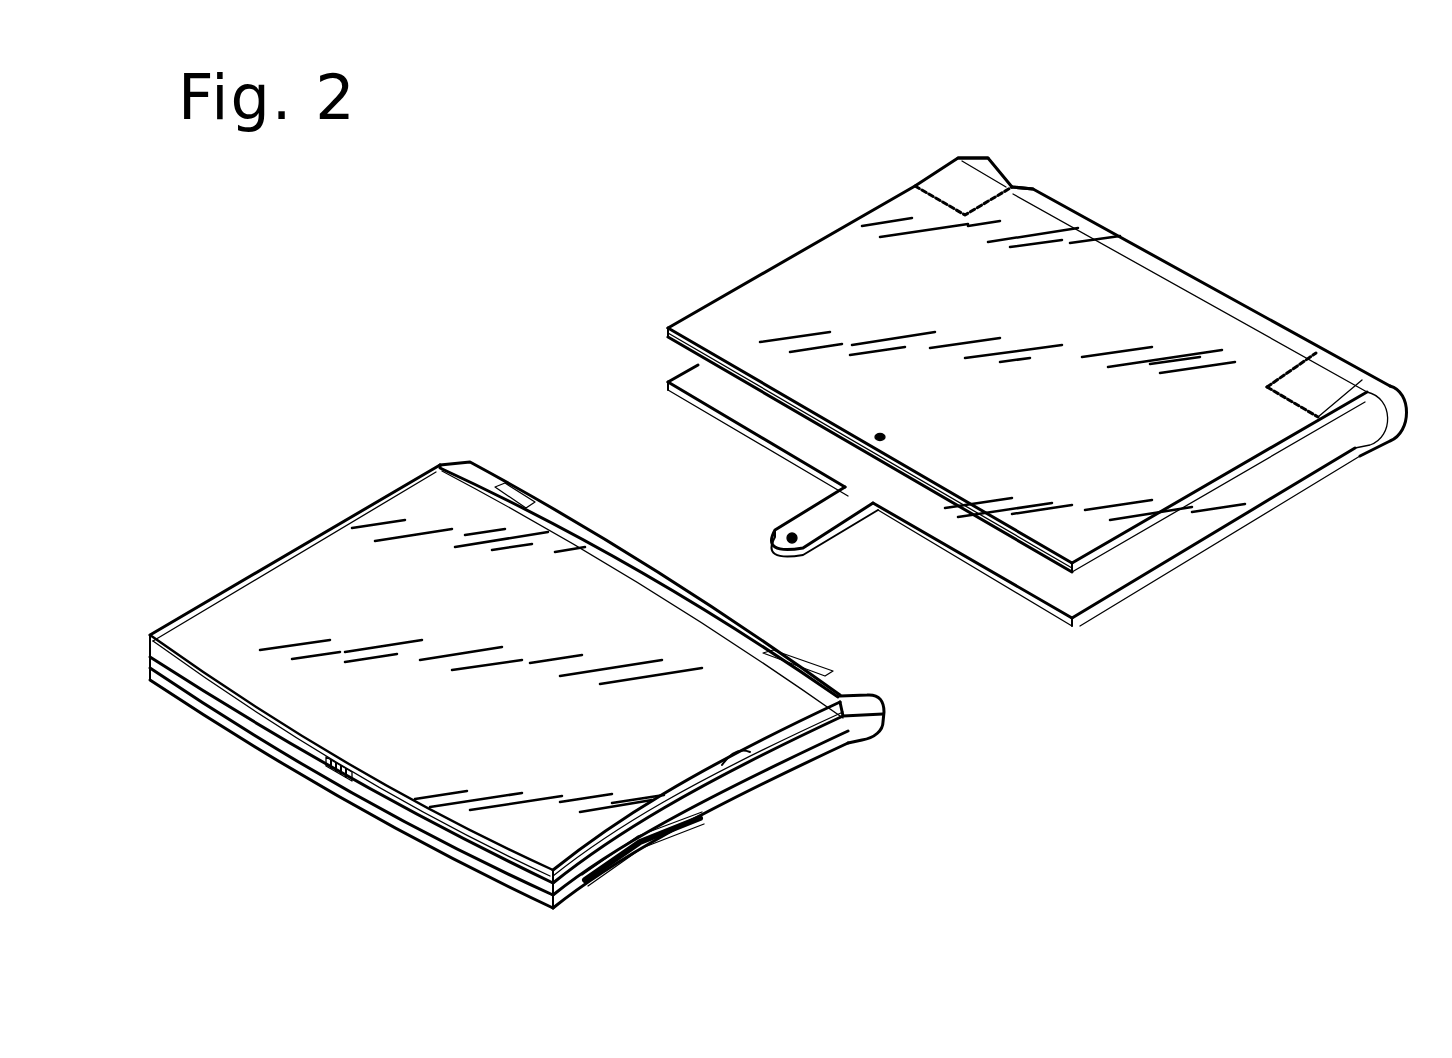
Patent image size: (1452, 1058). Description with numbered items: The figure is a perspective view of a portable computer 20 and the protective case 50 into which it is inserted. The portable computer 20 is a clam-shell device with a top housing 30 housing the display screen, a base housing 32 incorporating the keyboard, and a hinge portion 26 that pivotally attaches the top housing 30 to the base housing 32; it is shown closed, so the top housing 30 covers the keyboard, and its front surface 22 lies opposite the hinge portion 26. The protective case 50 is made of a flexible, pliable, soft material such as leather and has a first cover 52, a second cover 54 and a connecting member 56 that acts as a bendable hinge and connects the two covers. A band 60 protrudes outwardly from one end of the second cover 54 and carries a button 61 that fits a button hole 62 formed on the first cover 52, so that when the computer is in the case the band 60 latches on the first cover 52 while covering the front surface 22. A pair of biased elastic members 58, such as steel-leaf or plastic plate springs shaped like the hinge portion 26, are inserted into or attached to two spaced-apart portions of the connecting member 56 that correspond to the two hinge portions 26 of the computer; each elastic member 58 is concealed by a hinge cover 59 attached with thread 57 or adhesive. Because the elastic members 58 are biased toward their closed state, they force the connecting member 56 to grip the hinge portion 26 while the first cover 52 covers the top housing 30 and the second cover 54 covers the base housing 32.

The portable computer 20 is at (236, 576).
The front surface 22 is at (482, 868).
The hinge portion 26 is at (845, 688).
The top housing 30 is at (738, 755).
The base housing 32 is at (713, 835).
The protective case 50 is at (760, 256).
The first cover 52 is at (826, 256).
The second cover 54 is at (1208, 540).
The connecting member 56 is at (1408, 413).
The thread 57 is at (1022, 187).
The elastic member 58 is at (958, 202).
The hinge cover 59 is at (992, 172).
The band 60 is at (810, 515).
The button 61 is at (791, 537).
The button hole 62 is at (880, 442).